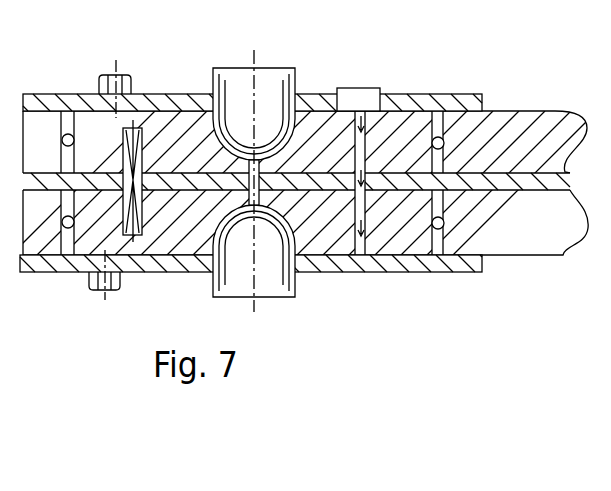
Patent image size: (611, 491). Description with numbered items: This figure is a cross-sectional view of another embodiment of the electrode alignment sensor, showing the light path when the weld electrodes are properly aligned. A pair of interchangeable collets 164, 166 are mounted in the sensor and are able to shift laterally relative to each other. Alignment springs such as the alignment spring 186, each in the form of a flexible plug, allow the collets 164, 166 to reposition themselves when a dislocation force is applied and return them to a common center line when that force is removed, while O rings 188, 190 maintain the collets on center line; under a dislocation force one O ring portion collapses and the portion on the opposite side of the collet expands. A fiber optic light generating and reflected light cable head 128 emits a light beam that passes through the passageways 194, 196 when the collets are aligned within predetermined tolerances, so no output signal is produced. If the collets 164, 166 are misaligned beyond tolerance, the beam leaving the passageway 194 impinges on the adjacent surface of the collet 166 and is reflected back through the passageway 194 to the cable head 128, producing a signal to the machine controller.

The light generating and reflected light cable head 128 is at (372, 97).
The collet 164 is at (537, 130).
The collet 166 is at (530, 233).
The alignment spring 186 is at (137, 128).
The O ring 188 is at (440, 137).
The O ring 190 is at (435, 228).
The passageway 194 is at (352, 250).
The passageway 196 is at (352, 250).